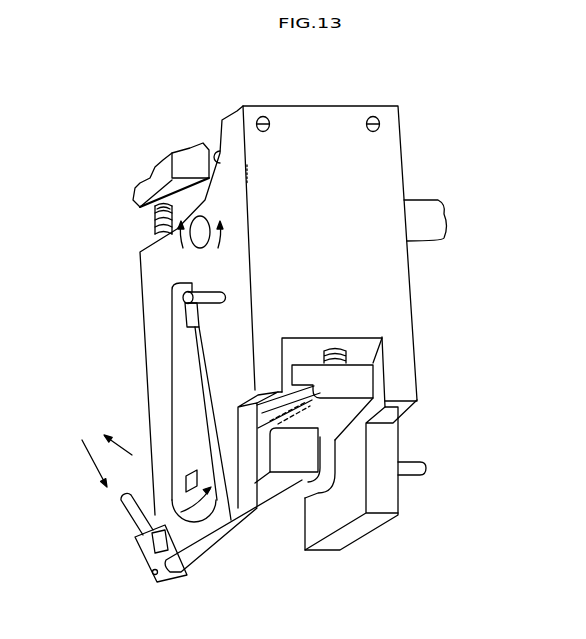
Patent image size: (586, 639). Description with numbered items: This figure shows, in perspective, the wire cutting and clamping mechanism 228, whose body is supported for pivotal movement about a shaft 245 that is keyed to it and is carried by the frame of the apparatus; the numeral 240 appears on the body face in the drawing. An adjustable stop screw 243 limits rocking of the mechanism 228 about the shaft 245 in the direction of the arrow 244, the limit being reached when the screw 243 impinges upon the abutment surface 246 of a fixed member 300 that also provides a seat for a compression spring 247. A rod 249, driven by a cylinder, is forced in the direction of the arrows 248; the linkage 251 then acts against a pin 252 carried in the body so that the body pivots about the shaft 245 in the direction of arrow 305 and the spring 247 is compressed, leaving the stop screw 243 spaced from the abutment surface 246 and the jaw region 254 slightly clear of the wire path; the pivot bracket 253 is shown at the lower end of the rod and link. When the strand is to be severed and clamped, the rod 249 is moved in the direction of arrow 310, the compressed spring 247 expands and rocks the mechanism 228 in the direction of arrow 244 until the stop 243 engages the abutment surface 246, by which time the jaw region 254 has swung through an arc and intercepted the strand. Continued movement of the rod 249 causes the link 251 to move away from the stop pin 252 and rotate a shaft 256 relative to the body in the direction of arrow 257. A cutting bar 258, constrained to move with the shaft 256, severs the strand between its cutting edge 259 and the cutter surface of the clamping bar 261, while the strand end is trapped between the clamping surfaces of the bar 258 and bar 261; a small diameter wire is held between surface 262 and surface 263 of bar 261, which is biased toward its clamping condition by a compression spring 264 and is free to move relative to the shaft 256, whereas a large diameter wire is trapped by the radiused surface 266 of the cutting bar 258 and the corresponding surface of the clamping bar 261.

The mechanism 228 is at (405, 147).
The mounting block 240 is at (302, 175).
The adjustable stop screw 243 is at (216, 150).
The arrow 244 is at (206, 222).
The shaft 245 is at (447, 208).
The abutment surface 246 is at (178, 164).
The compression spring 247 is at (155, 222).
The arrows 248 is at (122, 438).
The rod 249 is at (133, 510).
The linkage 251 is at (180, 357).
The pin 252 is at (211, 290).
The pivot bracket 253 is at (150, 573).
The jaw region 254 is at (248, 419).
The shaft 256 is at (413, 467).
The arrow 257 is at (195, 500).
The cutting bar 258 is at (275, 488).
The cutting edge 259 is at (262, 446).
The clamping bar 261 is at (253, 398).
The surface 262 is at (333, 412).
The surface 263 is at (306, 340).
The compression spring 264 is at (338, 350).
The radiused surface 266 is at (316, 407).
The member 300 is at (145, 187).
The arrow 305 is at (167, 229).
The arrow 310 is at (78, 463).